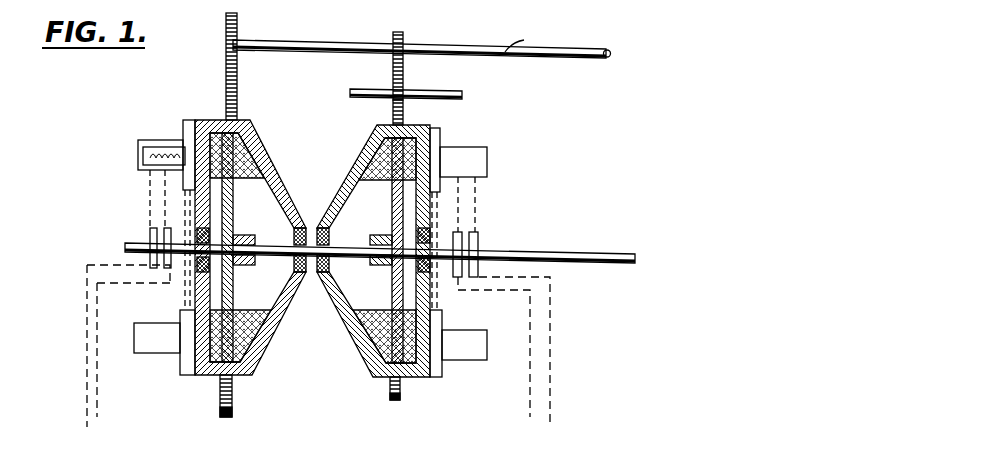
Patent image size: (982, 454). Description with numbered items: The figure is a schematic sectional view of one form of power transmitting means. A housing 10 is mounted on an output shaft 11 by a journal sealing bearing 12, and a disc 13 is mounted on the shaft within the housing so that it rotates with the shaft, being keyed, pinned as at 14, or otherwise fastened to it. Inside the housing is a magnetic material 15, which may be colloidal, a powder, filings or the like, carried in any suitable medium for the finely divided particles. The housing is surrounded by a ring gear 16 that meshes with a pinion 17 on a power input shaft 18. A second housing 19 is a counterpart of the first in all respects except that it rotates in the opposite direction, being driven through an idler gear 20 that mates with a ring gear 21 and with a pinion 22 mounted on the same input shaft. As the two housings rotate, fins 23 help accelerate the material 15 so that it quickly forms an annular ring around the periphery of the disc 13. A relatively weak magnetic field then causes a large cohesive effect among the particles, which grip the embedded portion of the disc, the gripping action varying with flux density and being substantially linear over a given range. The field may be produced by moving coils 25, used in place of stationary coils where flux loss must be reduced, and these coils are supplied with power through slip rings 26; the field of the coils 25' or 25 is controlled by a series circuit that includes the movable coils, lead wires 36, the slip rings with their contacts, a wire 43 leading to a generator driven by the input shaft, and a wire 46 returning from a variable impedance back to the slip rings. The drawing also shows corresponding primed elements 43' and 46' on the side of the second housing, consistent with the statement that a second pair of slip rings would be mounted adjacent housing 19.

The housing 10 is at (284, 180).
The output shaft 11 is at (150, 247).
The journal sealing bearing 12 is at (197, 265).
The disc 13 is at (234, 213).
The pin 14 is at (252, 243).
The magnetic material 15 is at (236, 180).
The ring gear 16 is at (238, 108).
The pinion 17 is at (226, 58).
The power input shaft 18 is at (320, 45).
The housing 19 is at (422, 212).
The idler gear 20 is at (393, 80).
The ring gear 21 is at (404, 122).
The pinion 22 is at (403, 36).
The fins 23 is at (207, 121).
The moving coils 25 is at (154, 235).
The coils 25' is at (486, 248).
The slip rings 26 is at (177, 218).
The lead wires 36 is at (165, 186).
The wire 43 is at (133, 350).
The enclosure 43' is at (525, 347).
The wire 46 is at (102, 346).
The outer enclosure 46' is at (514, 352).